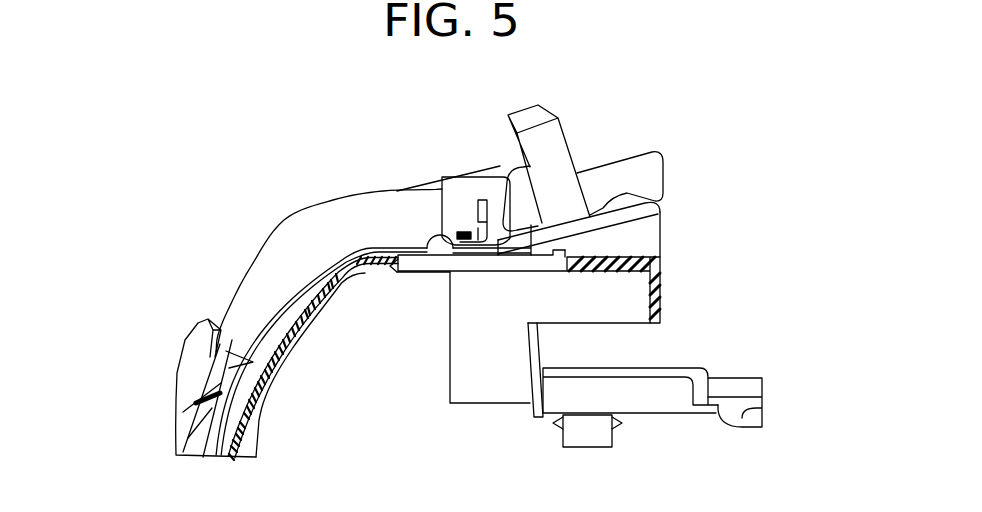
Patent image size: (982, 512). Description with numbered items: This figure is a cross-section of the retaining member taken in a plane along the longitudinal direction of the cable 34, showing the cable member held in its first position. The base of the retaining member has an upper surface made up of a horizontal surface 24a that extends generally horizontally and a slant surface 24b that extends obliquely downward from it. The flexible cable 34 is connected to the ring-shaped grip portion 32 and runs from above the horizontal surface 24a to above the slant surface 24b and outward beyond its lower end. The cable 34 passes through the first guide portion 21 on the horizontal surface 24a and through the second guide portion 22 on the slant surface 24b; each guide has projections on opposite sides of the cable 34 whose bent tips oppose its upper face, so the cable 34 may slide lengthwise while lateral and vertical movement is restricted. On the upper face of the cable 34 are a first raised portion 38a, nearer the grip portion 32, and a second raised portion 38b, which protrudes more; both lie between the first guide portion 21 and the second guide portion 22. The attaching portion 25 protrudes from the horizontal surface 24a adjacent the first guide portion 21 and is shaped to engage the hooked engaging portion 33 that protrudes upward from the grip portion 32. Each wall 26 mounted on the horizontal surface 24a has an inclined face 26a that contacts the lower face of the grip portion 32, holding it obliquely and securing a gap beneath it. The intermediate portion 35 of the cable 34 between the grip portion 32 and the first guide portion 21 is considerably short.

The first guide portion 21 is at (482, 238).
The second guide portion 22 is at (182, 398).
The horizontal surface 24a is at (605, 270).
The slant surface 24b is at (287, 348).
The attaching portion 25 is at (472, 192).
The wall 26 is at (648, 240).
The inclined face 26a is at (662, 193).
The grip portion 32 is at (640, 173).
The engaging portion 33 is at (556, 141).
The cable 34 is at (322, 263).
The intermediate portion 35 is at (490, 236).
The first raised portion 38a is at (437, 237).
The second raised portion 38b is at (253, 353).